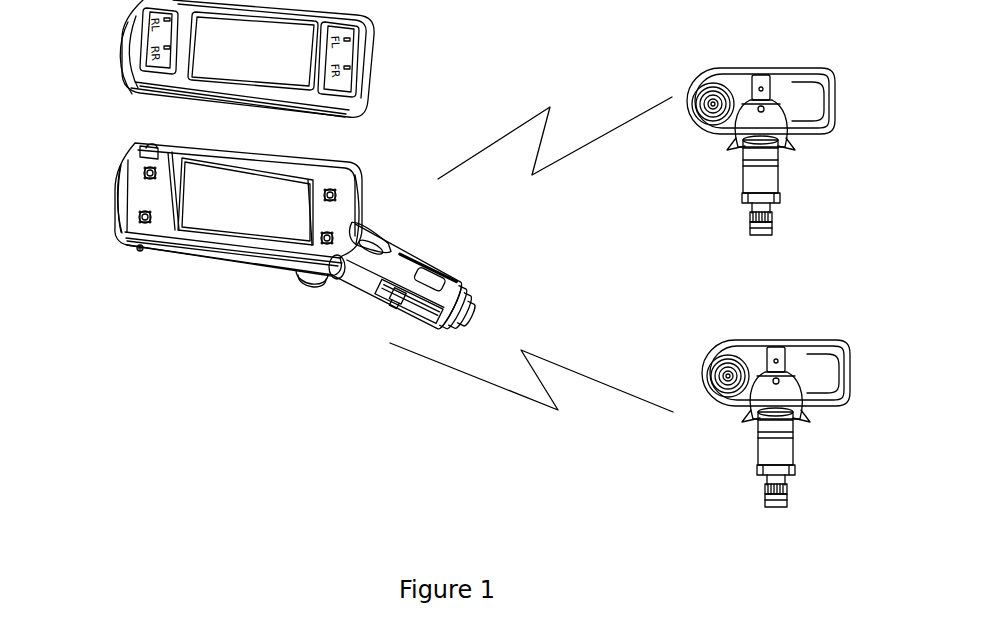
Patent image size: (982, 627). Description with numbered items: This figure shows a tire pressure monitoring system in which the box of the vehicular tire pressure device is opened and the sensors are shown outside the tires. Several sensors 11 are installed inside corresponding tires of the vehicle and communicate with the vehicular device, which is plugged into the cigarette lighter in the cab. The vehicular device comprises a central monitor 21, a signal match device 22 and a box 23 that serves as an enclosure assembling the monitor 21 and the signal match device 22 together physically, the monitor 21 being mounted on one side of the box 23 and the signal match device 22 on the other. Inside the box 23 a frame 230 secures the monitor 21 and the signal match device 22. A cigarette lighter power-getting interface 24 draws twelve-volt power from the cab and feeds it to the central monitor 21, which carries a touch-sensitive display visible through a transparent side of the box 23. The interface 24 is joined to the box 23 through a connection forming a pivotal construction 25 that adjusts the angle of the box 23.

The sensor 11 is at (833, 0).
The central monitor 21 is at (234, 222).
The signal match device 22 is at (118, 199).
The box 23 is at (162, 253).
The power-getting interface 24 is at (405, 265).
The pivotal construction 25 is at (318, 283).
The frame 230 is at (142, 146).